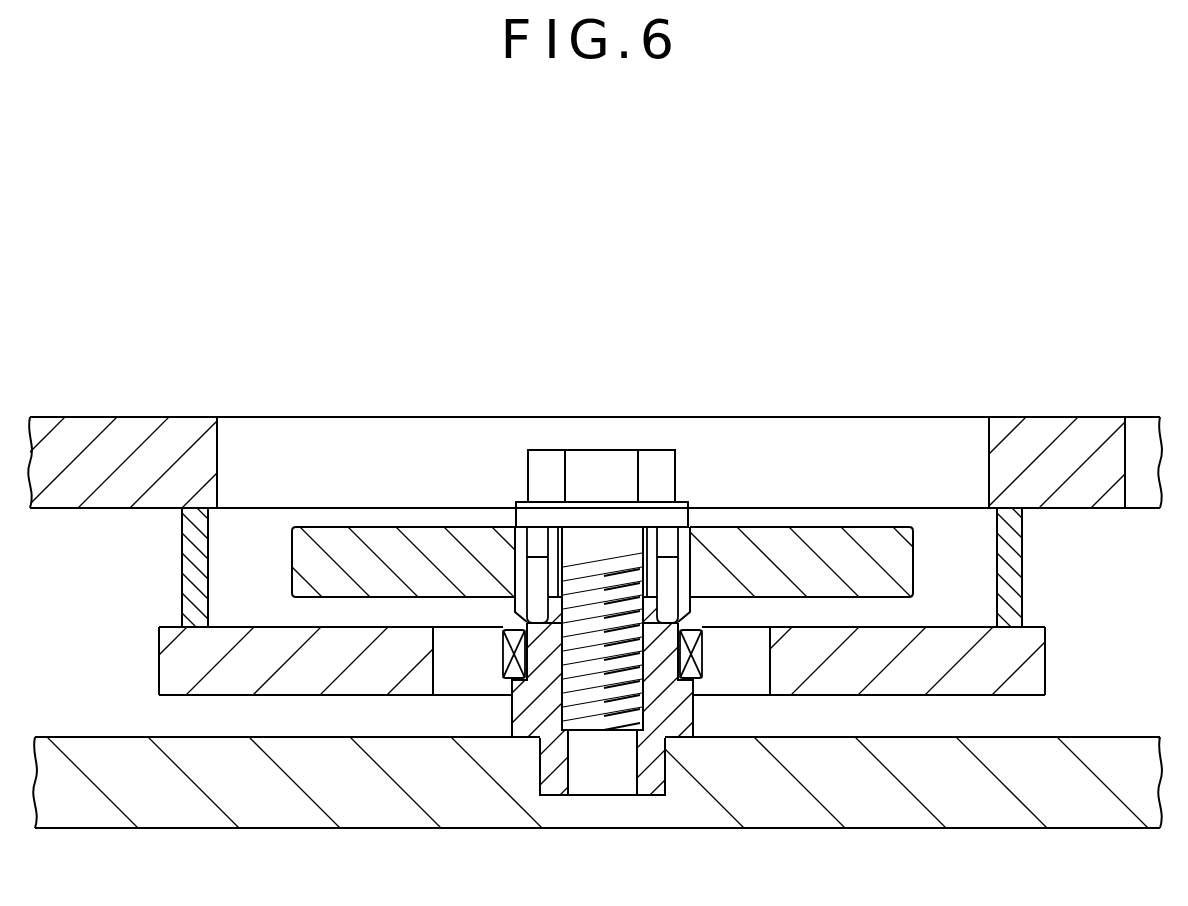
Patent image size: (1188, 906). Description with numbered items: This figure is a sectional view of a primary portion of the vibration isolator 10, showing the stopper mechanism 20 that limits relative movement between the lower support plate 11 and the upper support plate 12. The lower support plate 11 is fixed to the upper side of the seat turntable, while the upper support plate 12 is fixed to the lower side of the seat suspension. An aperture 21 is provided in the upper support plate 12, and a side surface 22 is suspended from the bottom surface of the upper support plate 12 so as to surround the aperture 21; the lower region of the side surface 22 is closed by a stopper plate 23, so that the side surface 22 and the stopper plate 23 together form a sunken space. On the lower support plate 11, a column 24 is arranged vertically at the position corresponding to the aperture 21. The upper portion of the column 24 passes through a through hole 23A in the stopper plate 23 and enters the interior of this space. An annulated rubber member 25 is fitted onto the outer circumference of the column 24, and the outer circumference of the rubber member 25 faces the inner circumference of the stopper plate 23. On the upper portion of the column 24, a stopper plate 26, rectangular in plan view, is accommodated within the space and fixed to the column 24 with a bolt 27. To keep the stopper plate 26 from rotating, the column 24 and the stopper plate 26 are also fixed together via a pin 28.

The vibration isolator 10 is at (717, 296).
The lower support plate 11 is at (878, 818).
The upper support plate 12 is at (1048, 427).
The stopper mechanism 20 is at (826, 455).
The aperture 21 is at (218, 457).
The side surface 22 is at (1018, 575).
The stopper plate 23 is at (1042, 663).
The through hole 23A is at (770, 660).
The column 24 is at (510, 712).
The rubber member 25 is at (505, 650).
The stopper plate 26 is at (900, 563).
The bolt 27 is at (605, 467).
The pin 28 is at (538, 575).